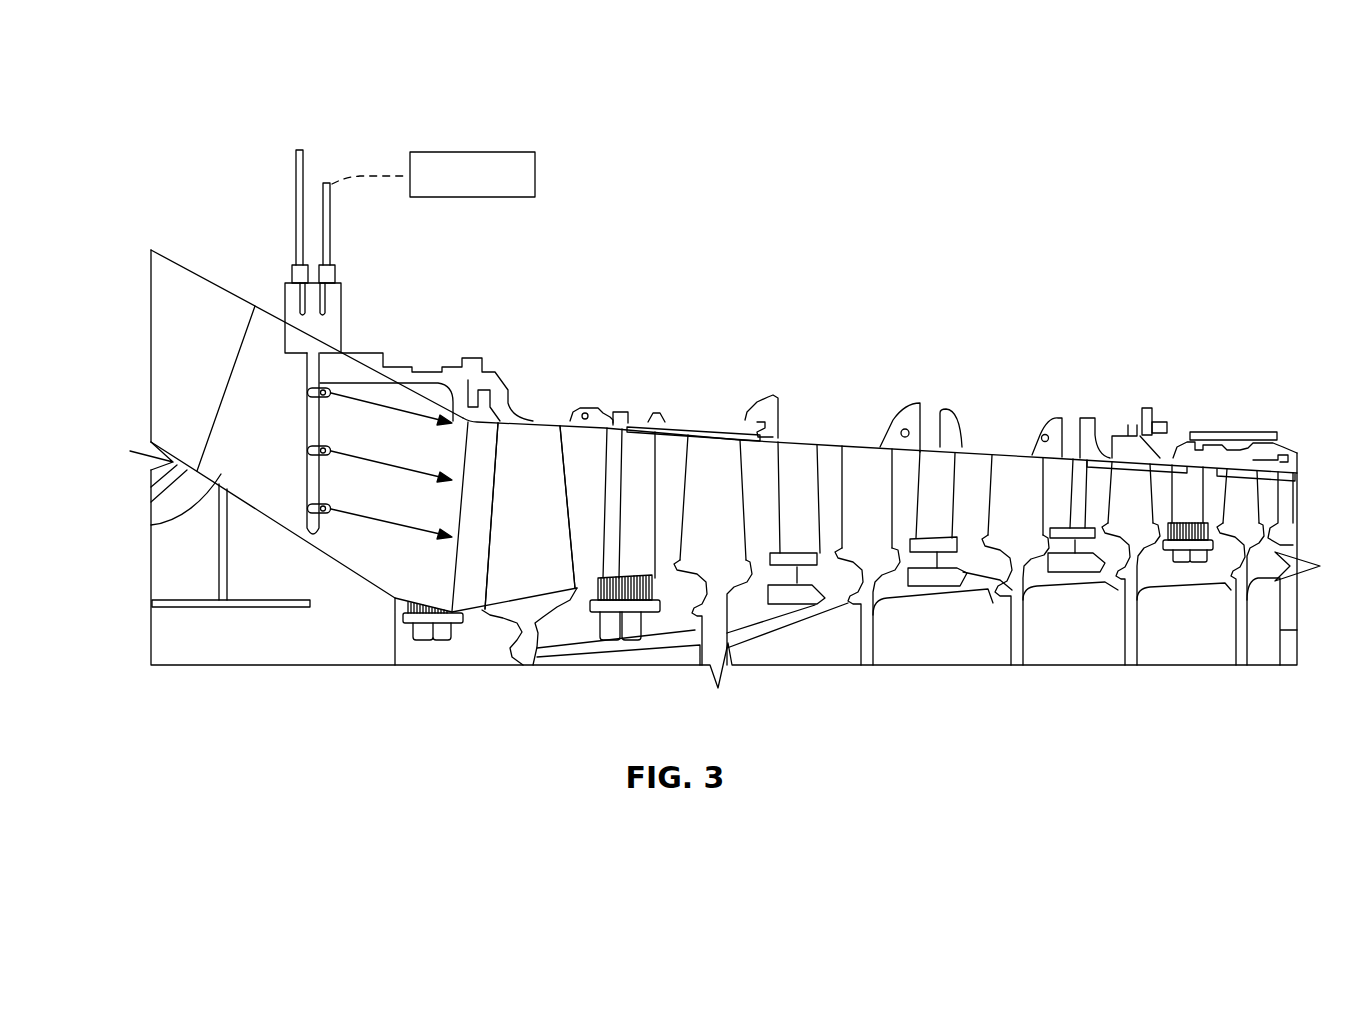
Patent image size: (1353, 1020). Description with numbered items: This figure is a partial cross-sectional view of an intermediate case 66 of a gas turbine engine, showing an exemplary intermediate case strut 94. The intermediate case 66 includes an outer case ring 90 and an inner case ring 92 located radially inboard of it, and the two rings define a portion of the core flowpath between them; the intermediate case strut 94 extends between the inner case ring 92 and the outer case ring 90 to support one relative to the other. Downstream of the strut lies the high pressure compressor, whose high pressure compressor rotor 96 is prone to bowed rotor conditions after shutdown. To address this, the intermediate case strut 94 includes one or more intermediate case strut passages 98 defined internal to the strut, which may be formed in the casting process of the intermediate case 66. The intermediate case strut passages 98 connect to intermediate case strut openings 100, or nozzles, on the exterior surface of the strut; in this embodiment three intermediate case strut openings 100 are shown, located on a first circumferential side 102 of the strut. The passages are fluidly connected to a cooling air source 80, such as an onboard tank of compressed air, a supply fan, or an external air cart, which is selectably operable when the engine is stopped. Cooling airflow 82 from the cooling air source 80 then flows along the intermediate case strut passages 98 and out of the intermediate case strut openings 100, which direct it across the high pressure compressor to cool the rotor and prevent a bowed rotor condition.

The intermediate case 66 is at (203, 136).
The cooling air source 80 is at (473, 150).
The cooling airflow 82 is at (388, 406).
The outer case ring 90 is at (195, 271).
The inner case ring 92 is at (151, 525).
The intermediate case strut 94 is at (275, 505).
The high pressure compressor rotor 96 is at (530, 443).
The intermediate case strut passage 98 is at (313, 354).
The intermediate case strut opening 100 is at (302, 363).
The first circumferential side 102 is at (237, 426).